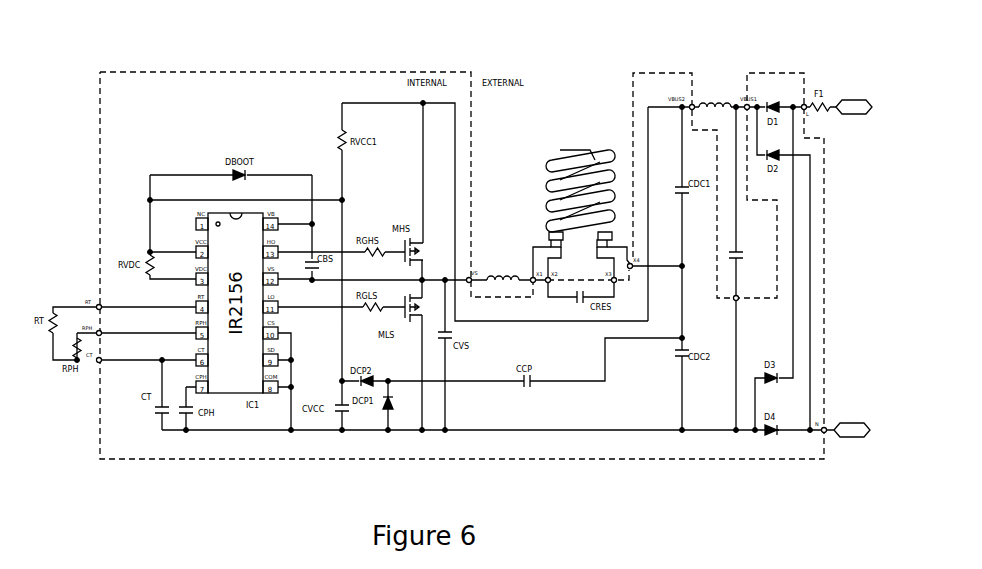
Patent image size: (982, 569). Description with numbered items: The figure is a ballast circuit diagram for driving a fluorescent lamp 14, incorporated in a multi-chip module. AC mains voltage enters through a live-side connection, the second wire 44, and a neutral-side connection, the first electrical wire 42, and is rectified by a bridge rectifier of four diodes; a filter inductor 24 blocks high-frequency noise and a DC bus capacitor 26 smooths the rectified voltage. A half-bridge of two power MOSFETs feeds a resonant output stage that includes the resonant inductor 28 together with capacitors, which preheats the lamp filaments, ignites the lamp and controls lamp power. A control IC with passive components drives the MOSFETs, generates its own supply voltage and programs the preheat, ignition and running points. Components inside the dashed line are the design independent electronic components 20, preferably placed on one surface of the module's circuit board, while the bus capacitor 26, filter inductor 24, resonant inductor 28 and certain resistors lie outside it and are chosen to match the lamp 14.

The design independent electronic components 20 is at (148, 90).
The fluorescent lamp 14 is at (566, 158).
The resonant inductor 28 is at (479, 277).
The filter inductor 24 is at (700, 97).
The DC bus capacitor 26 is at (740, 253).
The second wire 44 is at (866, 110).
The first electrical wire 42 is at (845, 427).